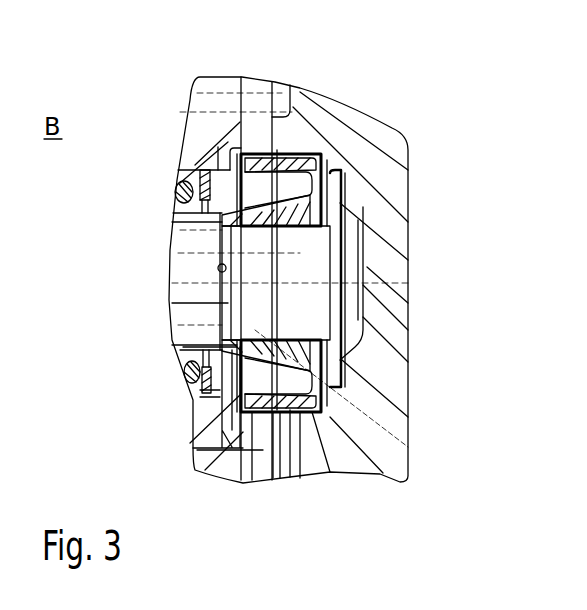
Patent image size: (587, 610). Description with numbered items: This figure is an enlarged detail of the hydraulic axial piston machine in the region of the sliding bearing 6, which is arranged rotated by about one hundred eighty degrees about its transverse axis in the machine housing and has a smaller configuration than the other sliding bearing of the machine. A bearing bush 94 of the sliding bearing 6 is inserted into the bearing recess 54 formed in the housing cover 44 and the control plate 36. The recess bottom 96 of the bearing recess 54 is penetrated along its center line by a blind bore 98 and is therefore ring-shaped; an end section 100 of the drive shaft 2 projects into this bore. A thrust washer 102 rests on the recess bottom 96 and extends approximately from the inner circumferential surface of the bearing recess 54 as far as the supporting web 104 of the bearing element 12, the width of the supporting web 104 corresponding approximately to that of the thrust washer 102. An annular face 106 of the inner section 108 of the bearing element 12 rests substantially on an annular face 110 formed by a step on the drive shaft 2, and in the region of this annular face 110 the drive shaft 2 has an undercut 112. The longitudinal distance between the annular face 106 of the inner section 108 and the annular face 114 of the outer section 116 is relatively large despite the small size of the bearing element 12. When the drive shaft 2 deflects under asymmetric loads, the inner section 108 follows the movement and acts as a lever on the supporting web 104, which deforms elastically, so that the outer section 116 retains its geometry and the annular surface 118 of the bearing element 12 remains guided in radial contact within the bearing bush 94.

The drive shaft 2 is at (183, 233).
The sliding bearing 6 is at (329, 128).
The bearing element 12 is at (230, 326).
The control plate 36 is at (250, 78).
The housing cover 44 is at (392, 413).
The bearing recess 54 is at (325, 166).
The bearing bush 94 is at (323, 420).
The recess bottom 96 is at (325, 376).
The blind bore 98 is at (326, 190).
The end section 100 is at (320, 295).
The thrust washer 102 is at (322, 172).
The supporting web 104 is at (338, 186).
The annular face 106 is at (173, 208).
The inner section 108 is at (291, 350).
The annular face 110 is at (223, 273).
The undercut 112 is at (227, 303).
The annular face 114 is at (226, 168).
The outer section 116 is at (253, 415).
The annular surface 118 is at (292, 425).